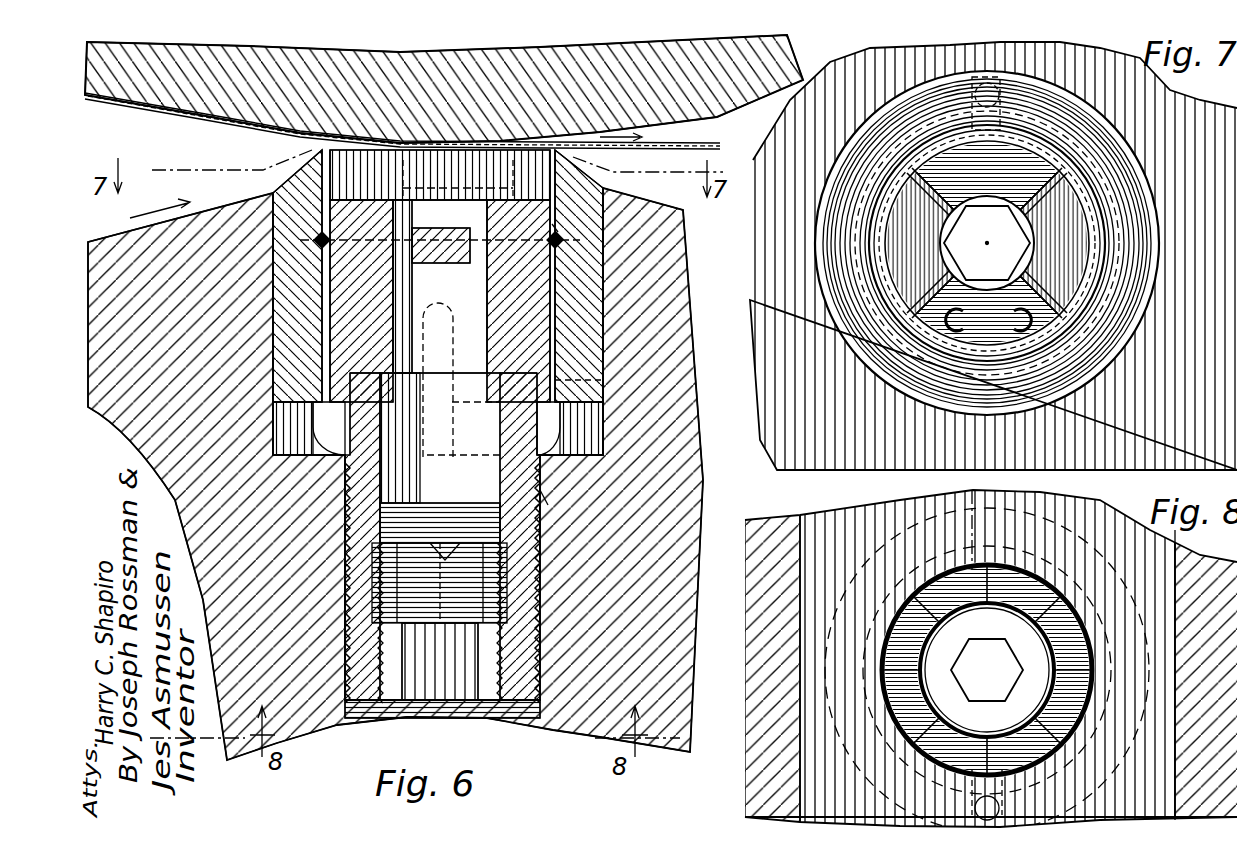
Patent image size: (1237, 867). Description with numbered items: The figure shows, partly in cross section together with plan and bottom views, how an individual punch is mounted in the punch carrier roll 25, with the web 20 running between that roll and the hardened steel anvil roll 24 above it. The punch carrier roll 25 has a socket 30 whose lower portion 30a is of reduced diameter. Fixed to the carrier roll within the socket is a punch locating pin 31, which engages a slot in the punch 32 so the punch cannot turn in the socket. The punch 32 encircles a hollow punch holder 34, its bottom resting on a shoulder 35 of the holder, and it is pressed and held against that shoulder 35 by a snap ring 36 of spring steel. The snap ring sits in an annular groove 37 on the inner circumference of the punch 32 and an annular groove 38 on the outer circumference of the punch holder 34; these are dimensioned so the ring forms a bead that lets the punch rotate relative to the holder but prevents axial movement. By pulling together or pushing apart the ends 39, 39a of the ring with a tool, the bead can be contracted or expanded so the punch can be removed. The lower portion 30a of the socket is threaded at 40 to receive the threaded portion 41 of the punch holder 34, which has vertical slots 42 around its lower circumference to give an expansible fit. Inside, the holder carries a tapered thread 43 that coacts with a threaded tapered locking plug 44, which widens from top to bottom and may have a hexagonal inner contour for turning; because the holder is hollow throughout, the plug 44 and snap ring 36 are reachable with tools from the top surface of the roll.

In FIG. 6, the web 20 is at (150, 112).
In FIG. 6, the anvil roll 24 is at (416, 92).
In FIG. 6, the punch carrier roll 25 is at (675, 489).
In FIG. 7, the punch carrier roll 25 is at (795, 420).
In FIG. 8, the punch carrier roll 25 is at (770, 505).
In FIG. 6, the socket 30 is at (580, 445).
In FIG. 6, the lower portion of socket 30a is at (550, 505).
In FIG. 6, the punch locating pin 31 is at (606, 380).
In FIG. 7, the punch locating pin 31 is at (980, 78).
In FIG. 8, the punch locating pin 31 is at (1002, 807).
In FIG. 6, the punch 32 is at (583, 303).
In FIG. 6, the punch holder 34 is at (352, 325).
In FIG. 7, the punch holder 34 is at (912, 243).
In FIG. 6, the shoulder 35 is at (335, 412).
In FIG. 6, the snap ring 36 is at (558, 229).
In FIG. 6, the annular groove 37 is at (562, 243).
In FIG. 6, the annular groove 38 is at (315, 240).
In FIG. 7, the end of snap ring 39 is at (957, 332).
In FIG. 7, the end of snap ring 39a is at (1018, 334).
In FIG. 6, the thread of socket 40 is at (546, 584).
In FIG. 6, the threaded portion of punch holder 41 is at (346, 652).
In FIG. 8, the threaded portion of punch holder 41 is at (895, 640).
In FIG. 6, the vertical slots 42 is at (478, 635).
In FIG. 8, the vertical slots 42 is at (1003, 710).
In FIG. 6, the tapered thread 43 is at (382, 518).
In FIG. 6, the locking plug 44 is at (400, 627).
In FIG. 7, the locking plug 44 is at (987, 205).
In FIG. 8, the locking plug 44 is at (950, 693).